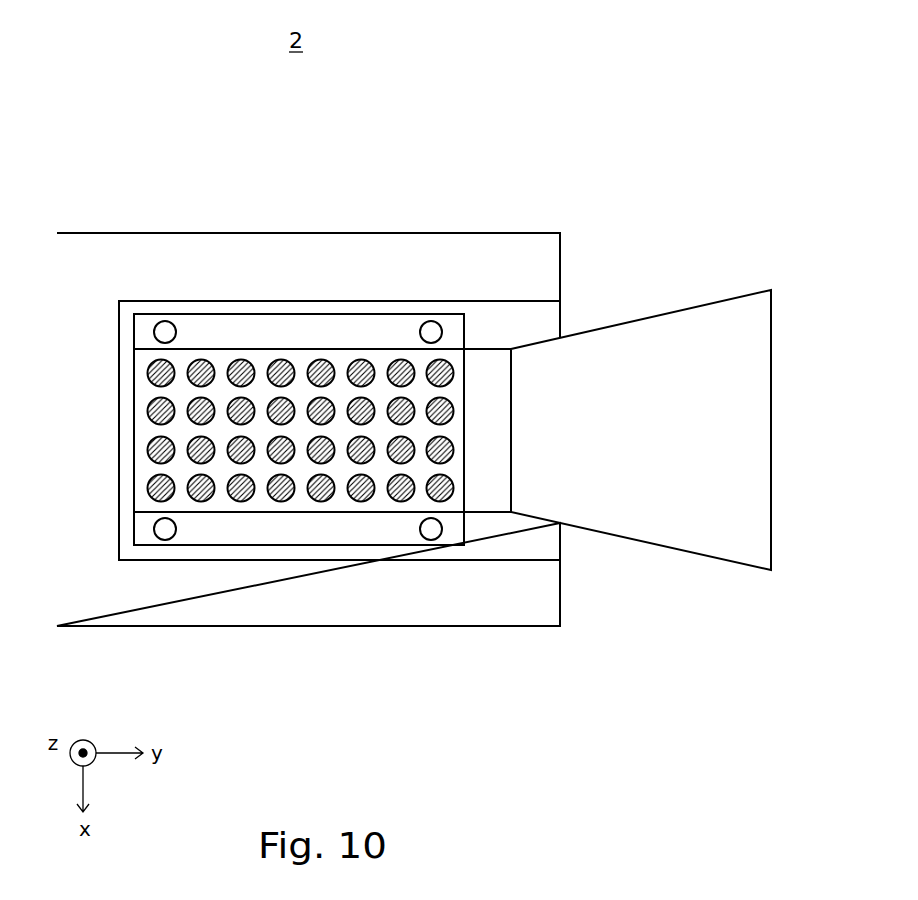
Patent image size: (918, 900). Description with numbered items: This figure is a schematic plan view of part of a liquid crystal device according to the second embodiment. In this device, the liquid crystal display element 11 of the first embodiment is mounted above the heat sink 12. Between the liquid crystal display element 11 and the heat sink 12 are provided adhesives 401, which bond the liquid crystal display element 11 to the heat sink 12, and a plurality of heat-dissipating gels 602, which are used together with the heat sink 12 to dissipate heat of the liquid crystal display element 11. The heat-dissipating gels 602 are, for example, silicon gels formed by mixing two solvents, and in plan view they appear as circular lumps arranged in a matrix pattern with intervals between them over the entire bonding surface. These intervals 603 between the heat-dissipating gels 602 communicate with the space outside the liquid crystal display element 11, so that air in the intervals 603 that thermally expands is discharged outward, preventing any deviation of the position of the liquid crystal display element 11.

The heat sink 12 is at (432, 253).
The liquid crystal display element 11 is at (363, 313).
The intervals 603 is at (217, 392).
The adhesives 401 is at (164, 324).
The heat-dissipating gels 602 is at (283, 366).